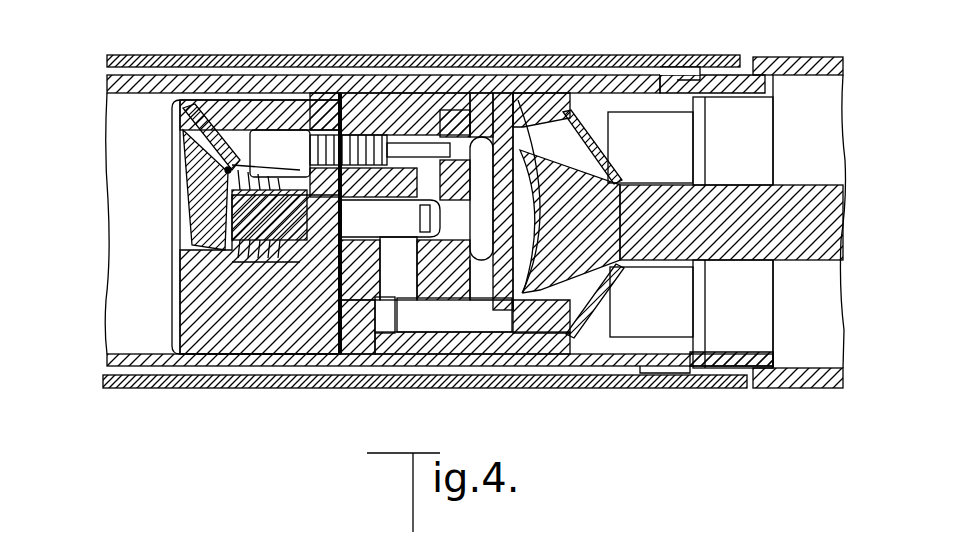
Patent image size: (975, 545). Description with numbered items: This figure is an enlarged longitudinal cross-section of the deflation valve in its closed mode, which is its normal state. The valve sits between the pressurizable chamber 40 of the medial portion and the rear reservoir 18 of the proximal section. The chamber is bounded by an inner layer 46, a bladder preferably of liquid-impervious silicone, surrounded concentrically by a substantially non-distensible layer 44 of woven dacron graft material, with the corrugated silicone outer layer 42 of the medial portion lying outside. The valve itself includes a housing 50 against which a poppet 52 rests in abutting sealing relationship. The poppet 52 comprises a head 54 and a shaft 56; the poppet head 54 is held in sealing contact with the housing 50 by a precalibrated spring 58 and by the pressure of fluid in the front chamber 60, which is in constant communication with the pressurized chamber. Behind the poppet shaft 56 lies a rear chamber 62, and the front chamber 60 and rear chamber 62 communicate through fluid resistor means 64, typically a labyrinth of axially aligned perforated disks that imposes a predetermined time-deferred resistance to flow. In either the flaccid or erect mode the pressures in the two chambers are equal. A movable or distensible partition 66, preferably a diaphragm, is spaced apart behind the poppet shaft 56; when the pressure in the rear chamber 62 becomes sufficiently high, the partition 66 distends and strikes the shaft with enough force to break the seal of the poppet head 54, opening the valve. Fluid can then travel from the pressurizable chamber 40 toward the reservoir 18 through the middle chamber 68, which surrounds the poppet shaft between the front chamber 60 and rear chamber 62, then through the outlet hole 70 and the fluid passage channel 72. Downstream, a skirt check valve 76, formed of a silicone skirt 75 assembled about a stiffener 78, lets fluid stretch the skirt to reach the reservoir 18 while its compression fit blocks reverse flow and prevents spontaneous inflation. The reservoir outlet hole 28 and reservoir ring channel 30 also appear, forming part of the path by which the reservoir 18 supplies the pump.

The rear reservoir 18 is at (823, 296).
The reservoir outlet hole 28 is at (668, 356).
The reservoir ring channel 30 is at (670, 80).
The pressurizable chamber 40 is at (116, 168).
The outer layer 42 is at (107, 386).
The non-distensible layer 44 is at (107, 72).
The inner layer 46 is at (107, 93).
The housing 50 is at (330, 300).
The poppet 52 is at (240, 152).
The poppet head 54 is at (322, 280).
The poppet shaft 56 is at (397, 217).
The precalibrated spring 58 is at (228, 262).
The front chamber 60 is at (291, 143).
The rear chamber 62 is at (485, 160).
The fluid resistor means 64 is at (385, 135).
The partition 66 is at (452, 226).
The middle chamber 68 is at (347, 200).
The outlet hole 70 is at (380, 330).
The fluid passage channel 72 is at (427, 320).
The skirt 75 is at (610, 293).
The skirt check valve 76 is at (608, 157).
The stiffener 78 is at (842, 197).